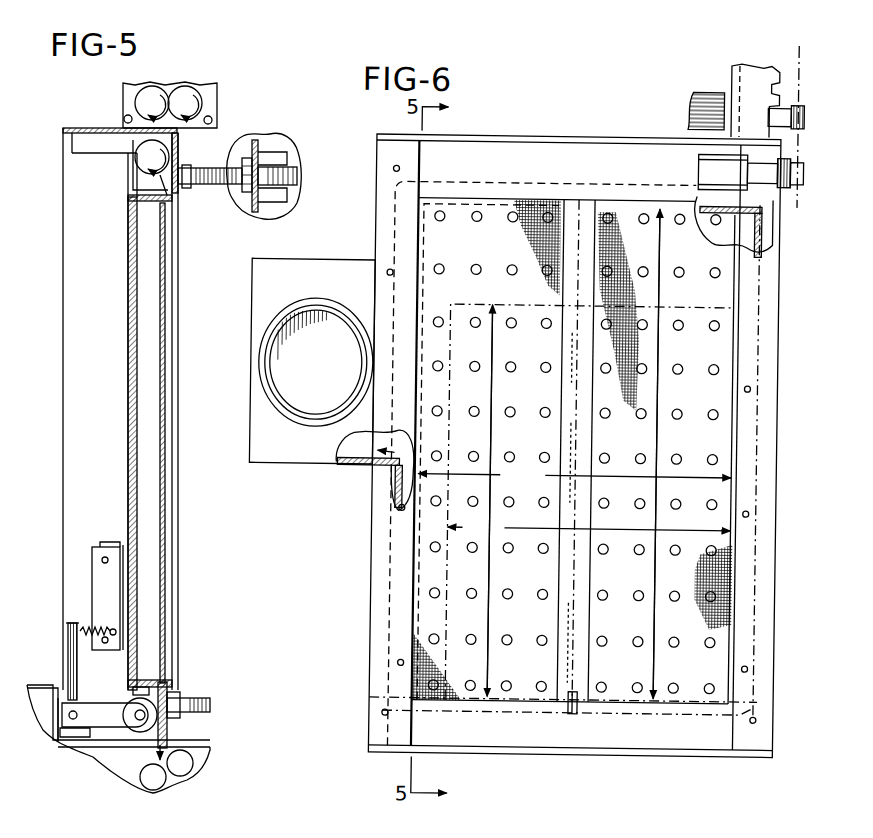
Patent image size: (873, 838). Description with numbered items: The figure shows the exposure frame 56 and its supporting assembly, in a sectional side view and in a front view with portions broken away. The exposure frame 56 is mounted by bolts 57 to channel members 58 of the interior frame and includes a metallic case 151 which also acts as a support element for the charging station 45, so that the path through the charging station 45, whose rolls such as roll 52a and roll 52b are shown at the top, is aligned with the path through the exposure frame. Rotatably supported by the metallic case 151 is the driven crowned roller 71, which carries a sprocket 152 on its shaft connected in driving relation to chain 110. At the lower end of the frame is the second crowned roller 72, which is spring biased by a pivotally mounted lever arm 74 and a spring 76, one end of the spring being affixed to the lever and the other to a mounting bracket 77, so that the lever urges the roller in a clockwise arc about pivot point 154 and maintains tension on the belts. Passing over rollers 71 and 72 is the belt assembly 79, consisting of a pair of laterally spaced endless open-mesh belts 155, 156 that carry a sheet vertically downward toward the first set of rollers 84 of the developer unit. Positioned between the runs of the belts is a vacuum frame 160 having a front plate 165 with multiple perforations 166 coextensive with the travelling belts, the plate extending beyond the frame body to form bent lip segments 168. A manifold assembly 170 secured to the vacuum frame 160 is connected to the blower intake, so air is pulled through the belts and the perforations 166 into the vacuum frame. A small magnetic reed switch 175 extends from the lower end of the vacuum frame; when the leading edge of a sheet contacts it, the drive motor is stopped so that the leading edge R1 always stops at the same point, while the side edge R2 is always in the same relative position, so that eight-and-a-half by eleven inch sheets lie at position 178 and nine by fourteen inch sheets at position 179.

In FIG. 5, the charging station 45 is at (170, 85).
In FIG. 6, the charging station 45 is at (736, 57).
In FIG. 5, the roll 52a is at (134, 98).
In FIG. 5, the roller 52b is at (200, 104).
In FIG. 5, the exposure frame 56 is at (104, 322).
In FIG. 5, the bolts 57 is at (213, 188).
In FIG. 5, the channel members 58 is at (272, 158).
In FIG. 5, the crowned roller 71 is at (137, 160).
In FIG. 6, the crowned roller 71 is at (706, 157).
In FIG. 5, the crowned roller 72 is at (133, 732).
In FIG. 5, the lever arm 74 is at (110, 728).
In FIG. 5, the spring 76 is at (83, 628).
In FIG. 5, the mounting bracket 77 is at (118, 575).
In FIG. 5, the belt assembly 79 is at (170, 168).
In FIG. 6, the belt assembly 79 is at (528, 183).
In FIG. 5, the first set of rollers 84 is at (178, 783).
In FIG. 6, the chain 110 is at (798, 40).
In FIG. 5, the metallic case 151 is at (96, 128).
In FIG. 6, the sprocket 152 is at (798, 185).
In FIG. 5, the pivot point 154 is at (75, 717).
In FIG. 6, the endless belt 155 is at (517, 206).
In FIG. 6, the endless belt 156 is at (633, 210).
In FIG. 5, the vacuum frame 160 is at (129, 243).
In FIG. 6, the vacuum frame 160 is at (707, 211).
In FIG. 5, the front plate 165 is at (163, 298).
In FIG. 6, the front plate 165 is at (580, 210).
In FIG. 5, the perforations 166 is at (163, 262).
In FIG. 6, the perforations 166 is at (515, 220).
In FIG. 5, the bent lip segments 168 is at (162, 183).
In FIG. 6, the manifold assembly 170 is at (302, 464).
In FIG. 5, the magnetic reed switch 175 is at (142, 686).
In FIG. 6, the magnetic reed switch 175 is at (581, 711).
In FIG. 6, the sheet position 178 is at (588, 530).
In FIG. 6, the sheet position 179 is at (575, 453).
In FIG. 6, the reference edge R1 is at (704, 697).
In FIG. 6, the reference side edge R2 is at (734, 344).